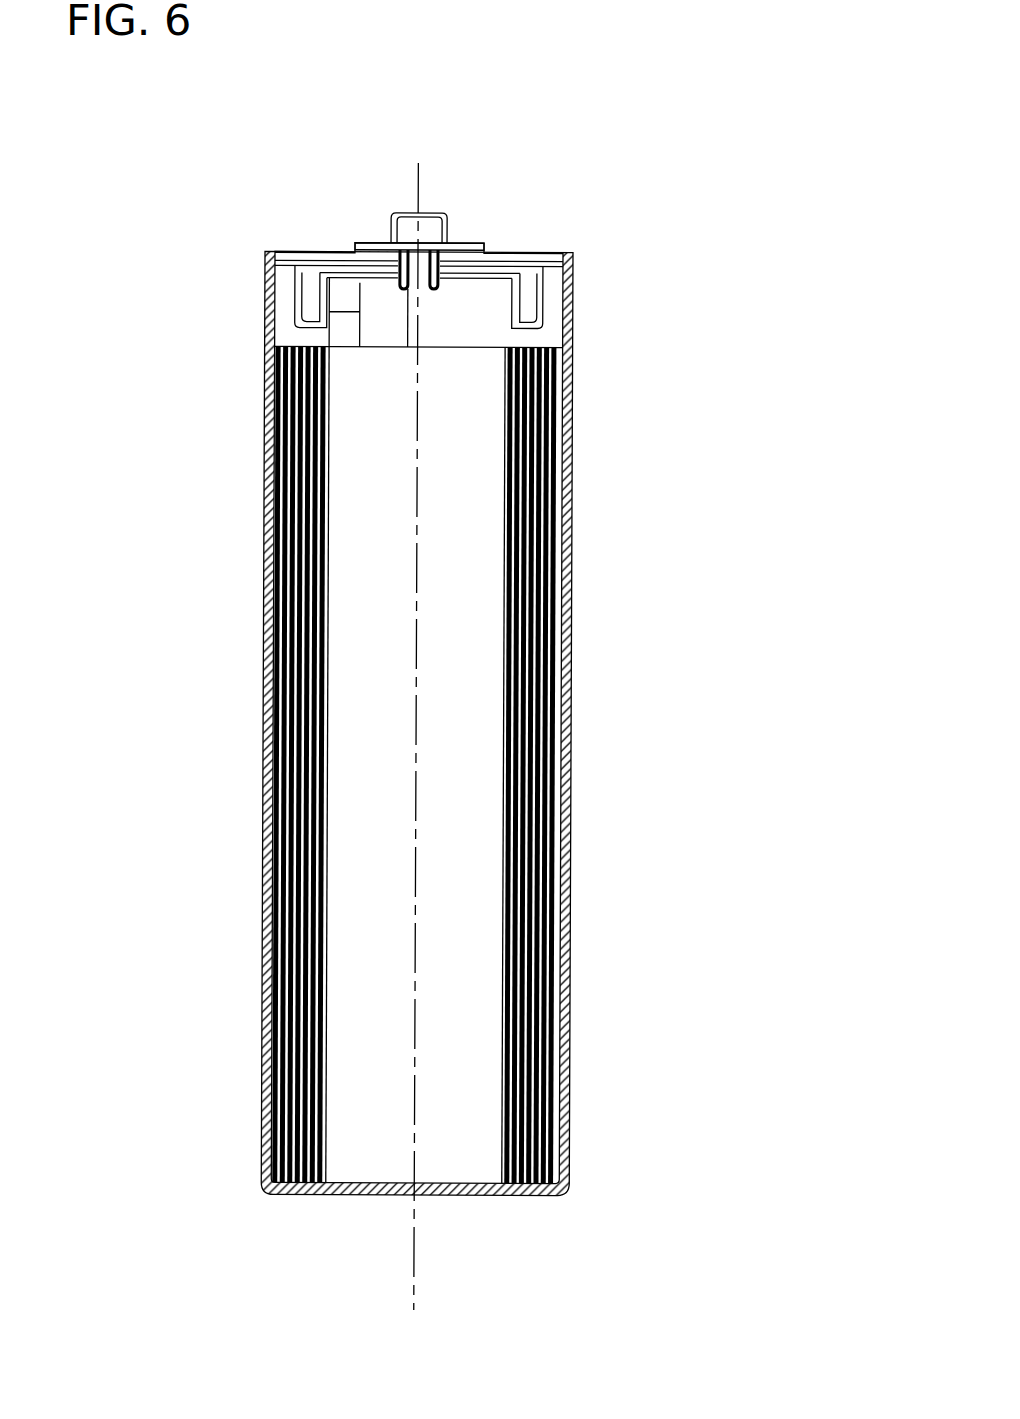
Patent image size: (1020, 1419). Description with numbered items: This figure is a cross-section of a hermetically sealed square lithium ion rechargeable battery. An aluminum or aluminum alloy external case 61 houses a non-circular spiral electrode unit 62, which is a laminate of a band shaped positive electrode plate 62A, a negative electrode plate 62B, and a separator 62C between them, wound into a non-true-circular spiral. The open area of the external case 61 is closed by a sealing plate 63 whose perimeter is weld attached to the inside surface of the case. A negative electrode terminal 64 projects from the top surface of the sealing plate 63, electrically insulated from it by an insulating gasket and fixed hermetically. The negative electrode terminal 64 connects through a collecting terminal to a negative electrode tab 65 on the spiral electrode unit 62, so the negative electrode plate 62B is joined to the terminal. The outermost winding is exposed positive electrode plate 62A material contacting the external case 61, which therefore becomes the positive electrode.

The external case 61 is at (572, 332).
The non-circular spiral electrode unit 62 is at (488, 684).
The positive electrode plate 62A is at (570, 417).
The negative electrode plate 62B is at (553, 522).
The separator 62C is at (557, 465).
The sealing plate 63 is at (517, 255).
The negative electrode terminal 64 is at (430, 212).
The negative electrode tab 65 is at (337, 333).